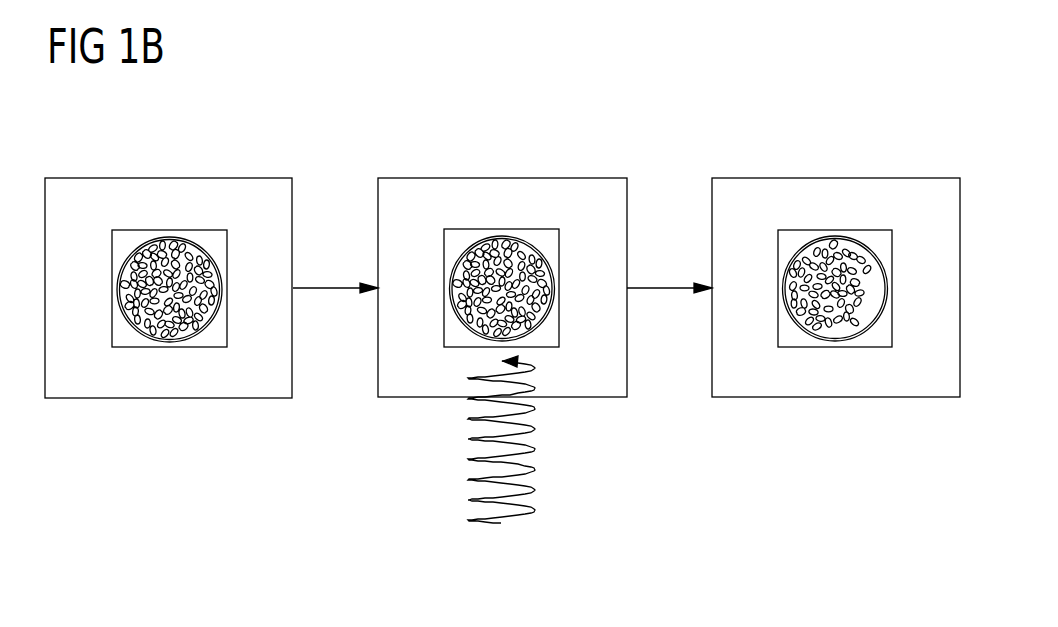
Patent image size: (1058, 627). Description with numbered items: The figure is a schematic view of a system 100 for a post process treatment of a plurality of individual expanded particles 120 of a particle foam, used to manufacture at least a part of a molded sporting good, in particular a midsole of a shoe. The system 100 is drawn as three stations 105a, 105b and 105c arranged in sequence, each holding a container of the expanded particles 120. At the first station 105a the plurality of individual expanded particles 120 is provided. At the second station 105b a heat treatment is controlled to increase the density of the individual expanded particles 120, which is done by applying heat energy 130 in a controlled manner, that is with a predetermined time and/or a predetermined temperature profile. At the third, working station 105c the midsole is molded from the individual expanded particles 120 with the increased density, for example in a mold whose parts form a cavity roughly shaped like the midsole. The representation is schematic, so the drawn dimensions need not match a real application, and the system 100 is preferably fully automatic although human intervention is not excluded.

The system 100 is at (672, 108).
The station 105a is at (233, 178).
The station 105b is at (566, 178).
The working station for molding 105c is at (900, 178).
The individual expanded particles 120 is at (125, 230).
The heat energy 130 is at (533, 452).